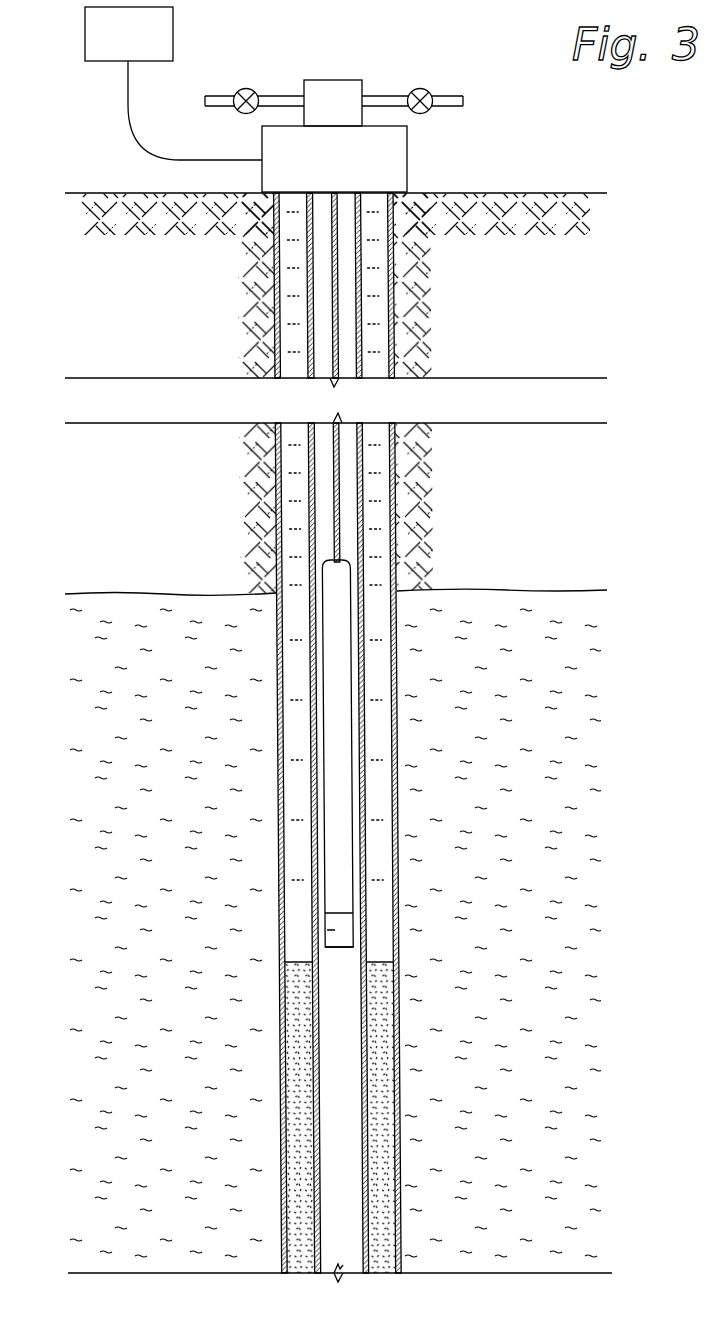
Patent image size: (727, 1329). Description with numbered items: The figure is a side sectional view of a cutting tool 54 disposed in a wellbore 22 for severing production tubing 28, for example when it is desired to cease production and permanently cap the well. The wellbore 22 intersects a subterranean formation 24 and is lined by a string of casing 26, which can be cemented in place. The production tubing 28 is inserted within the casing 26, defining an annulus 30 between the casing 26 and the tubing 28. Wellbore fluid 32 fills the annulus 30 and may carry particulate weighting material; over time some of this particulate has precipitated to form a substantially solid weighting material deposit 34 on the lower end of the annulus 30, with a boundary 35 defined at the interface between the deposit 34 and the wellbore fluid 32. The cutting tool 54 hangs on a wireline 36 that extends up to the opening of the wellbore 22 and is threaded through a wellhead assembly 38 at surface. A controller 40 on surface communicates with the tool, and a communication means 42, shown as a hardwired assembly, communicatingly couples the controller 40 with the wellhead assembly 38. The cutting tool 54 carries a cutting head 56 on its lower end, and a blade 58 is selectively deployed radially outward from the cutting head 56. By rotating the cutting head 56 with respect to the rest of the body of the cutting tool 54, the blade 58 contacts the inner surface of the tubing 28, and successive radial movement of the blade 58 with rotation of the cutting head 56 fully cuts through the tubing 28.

The wellbore 22 is at (282, 629).
The subterranean formation 24 is at (558, 770).
The casing 26 is at (278, 677).
The production tubing 28 is at (309, 726).
The annulus 30 is at (297, 761).
The wellbore fluid 32 is at (297, 806).
The weighting material deposit 34 is at (298, 1064).
The boundary 35 is at (380, 962).
The wireline 36 is at (335, 541).
The wellhead assembly 38 is at (410, 152).
The controller 40 is at (85, 33).
The communication means 42 is at (128, 93).
The cutting tool 54 is at (351, 660).
The cutting head 56 is at (333, 922).
The blade 58 is at (330, 935).